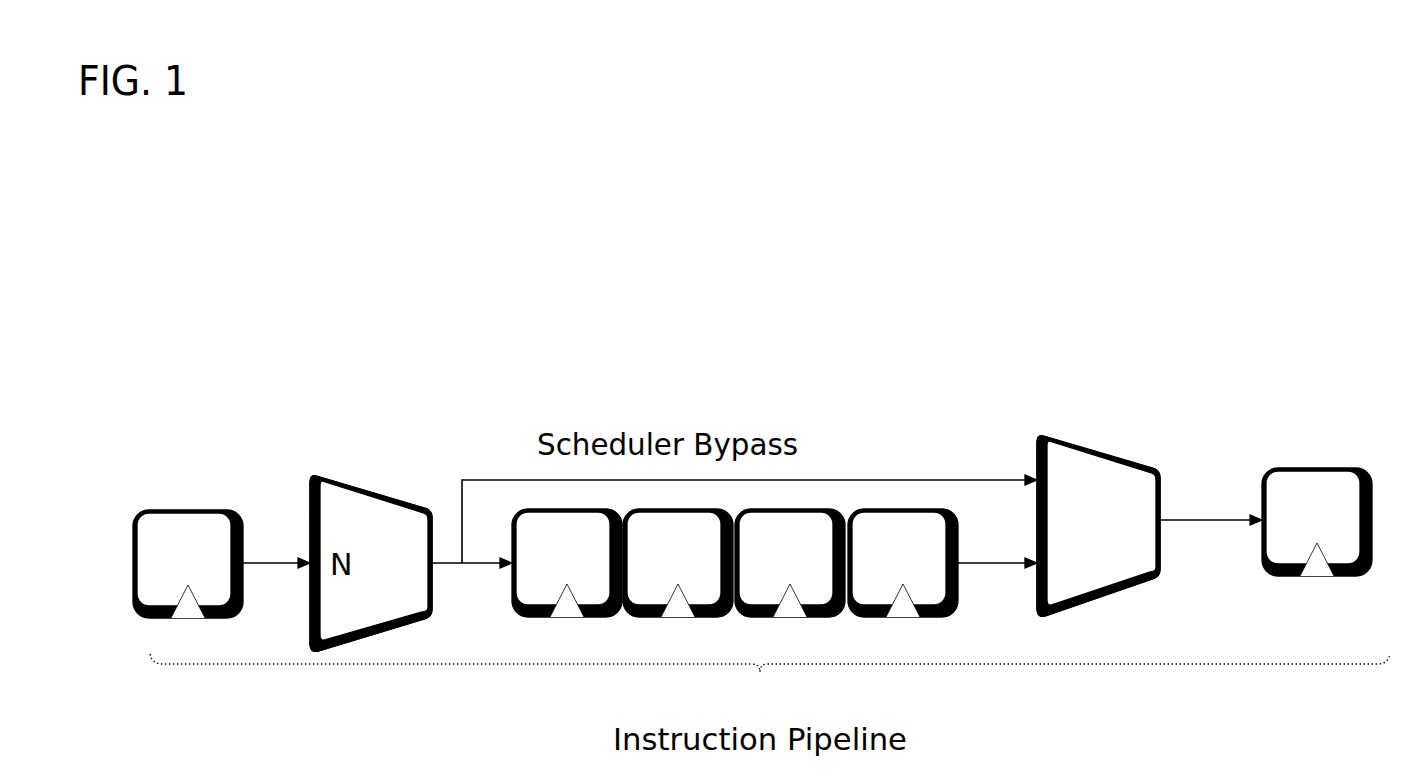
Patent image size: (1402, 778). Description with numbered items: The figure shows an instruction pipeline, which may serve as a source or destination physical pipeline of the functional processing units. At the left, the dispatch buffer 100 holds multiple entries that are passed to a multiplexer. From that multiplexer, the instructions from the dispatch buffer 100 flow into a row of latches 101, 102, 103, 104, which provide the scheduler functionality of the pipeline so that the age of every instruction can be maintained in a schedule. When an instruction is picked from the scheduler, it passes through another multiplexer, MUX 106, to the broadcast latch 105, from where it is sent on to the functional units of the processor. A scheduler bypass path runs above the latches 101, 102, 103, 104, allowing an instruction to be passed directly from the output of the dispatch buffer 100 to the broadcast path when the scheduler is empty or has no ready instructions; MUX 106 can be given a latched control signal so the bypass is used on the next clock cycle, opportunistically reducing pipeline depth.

The dispatch buffer 100 is at (159, 580).
The latch 101 is at (538, 579).
The latch 102 is at (649, 579).
The latch 103 is at (761, 579).
The latch 104 is at (874, 579).
The broadcast latch 105 is at (1288, 538).
The MUX 106 is at (1069, 520).